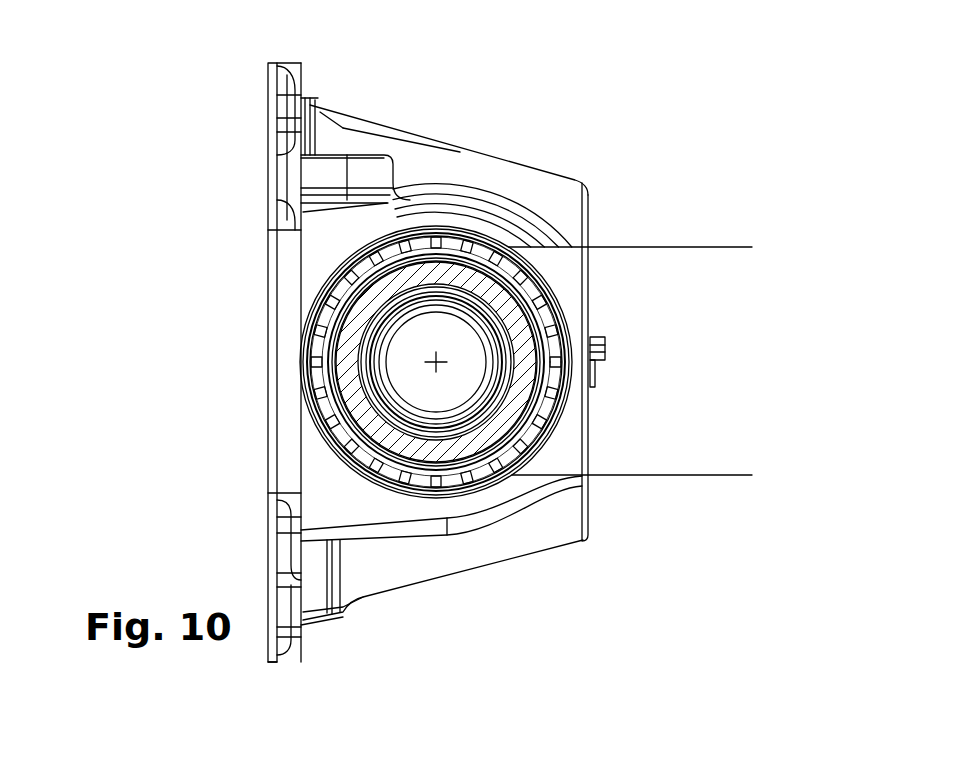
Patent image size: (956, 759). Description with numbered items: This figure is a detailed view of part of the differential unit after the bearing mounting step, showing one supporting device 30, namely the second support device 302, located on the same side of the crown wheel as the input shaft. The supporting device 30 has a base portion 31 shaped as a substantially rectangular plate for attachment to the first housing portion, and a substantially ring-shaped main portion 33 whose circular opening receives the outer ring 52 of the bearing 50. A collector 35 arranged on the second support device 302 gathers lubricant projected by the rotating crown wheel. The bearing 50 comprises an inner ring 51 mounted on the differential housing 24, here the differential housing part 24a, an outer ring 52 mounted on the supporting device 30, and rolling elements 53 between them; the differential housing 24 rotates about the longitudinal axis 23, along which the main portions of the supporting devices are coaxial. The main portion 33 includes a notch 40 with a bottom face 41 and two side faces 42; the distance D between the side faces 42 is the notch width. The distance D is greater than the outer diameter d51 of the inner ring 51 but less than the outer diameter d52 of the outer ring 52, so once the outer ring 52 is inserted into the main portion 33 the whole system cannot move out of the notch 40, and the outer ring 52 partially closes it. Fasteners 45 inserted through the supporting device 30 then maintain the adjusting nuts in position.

The supporting device 30 is at (450, 368).
The second support device 302 is at (450, 368).
The base portion 31 is at (283, 468).
The main portion 33 is at (363, 563).
The collector 35 is at (315, 172).
The notch 40 is at (572, 349).
The bottom face 41 is at (567, 283).
The side faces 42 is at (560, 250).
The fasteners 45 is at (606, 350).
The bearing 50 is at (377, 294).
The inner ring 51 is at (325, 355).
The outer ring 52 is at (312, 343).
The rolling elements 53 is at (432, 240).
The differential housing 24 is at (413, 362).
The differential housing part 24a is at (360, 415).
The longitudinal axis 23 is at (436, 368).
The outer diameter of the bearing inner ring d51 is at (478, 470).
The outer diameter of the bearing outer ring d52 is at (388, 490).
The distance between the side faces D is at (733, 247).